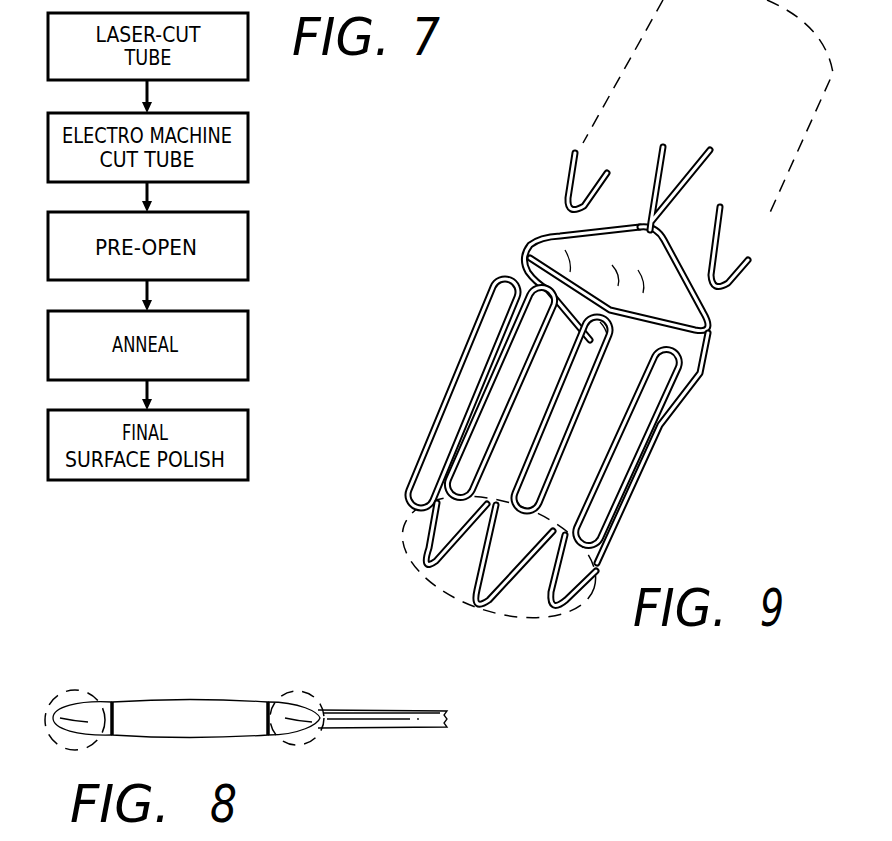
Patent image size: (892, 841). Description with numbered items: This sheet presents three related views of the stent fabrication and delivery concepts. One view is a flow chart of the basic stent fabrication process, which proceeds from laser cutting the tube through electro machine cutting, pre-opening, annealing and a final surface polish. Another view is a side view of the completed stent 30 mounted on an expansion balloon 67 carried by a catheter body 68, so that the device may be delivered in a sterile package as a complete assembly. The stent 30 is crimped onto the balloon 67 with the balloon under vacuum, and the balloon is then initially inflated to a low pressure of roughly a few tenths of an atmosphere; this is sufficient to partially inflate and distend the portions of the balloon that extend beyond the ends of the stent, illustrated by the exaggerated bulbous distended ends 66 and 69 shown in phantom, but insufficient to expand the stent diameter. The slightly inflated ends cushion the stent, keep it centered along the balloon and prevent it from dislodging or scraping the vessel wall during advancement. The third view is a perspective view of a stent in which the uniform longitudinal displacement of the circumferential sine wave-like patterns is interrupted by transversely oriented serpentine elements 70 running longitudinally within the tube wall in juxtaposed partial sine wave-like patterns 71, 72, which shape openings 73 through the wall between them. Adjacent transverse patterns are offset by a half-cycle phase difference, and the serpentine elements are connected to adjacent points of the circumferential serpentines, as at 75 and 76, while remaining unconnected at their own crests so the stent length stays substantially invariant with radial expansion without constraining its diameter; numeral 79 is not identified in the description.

In FIG. 8, the stent 30 is at (190, 700).
In FIG. 8, the distended end of the balloon 66 is at (84, 690).
In FIG. 8, the expansion balloon 67 is at (294, 702).
In FIG. 8, the catheter body 68 is at (386, 708).
In FIG. 8, the distended end of the balloon 69 is at (309, 746).
In FIG. 9, the transversely oriented serpentine elements 70 is at (597, 364).
In FIG. 9, the partial sine wave-like pattern 71 is at (560, 215).
In FIG. 9, the partial sine wave-like pattern 72 is at (713, 312).
In FIG. 9, the opening 73 is at (523, 268).
In FIG. 9, the connection point 75 is at (672, 385).
In FIG. 9, the connection point 76 is at (647, 218).
In FIG. 9, the end loop 79 is at (683, 170).